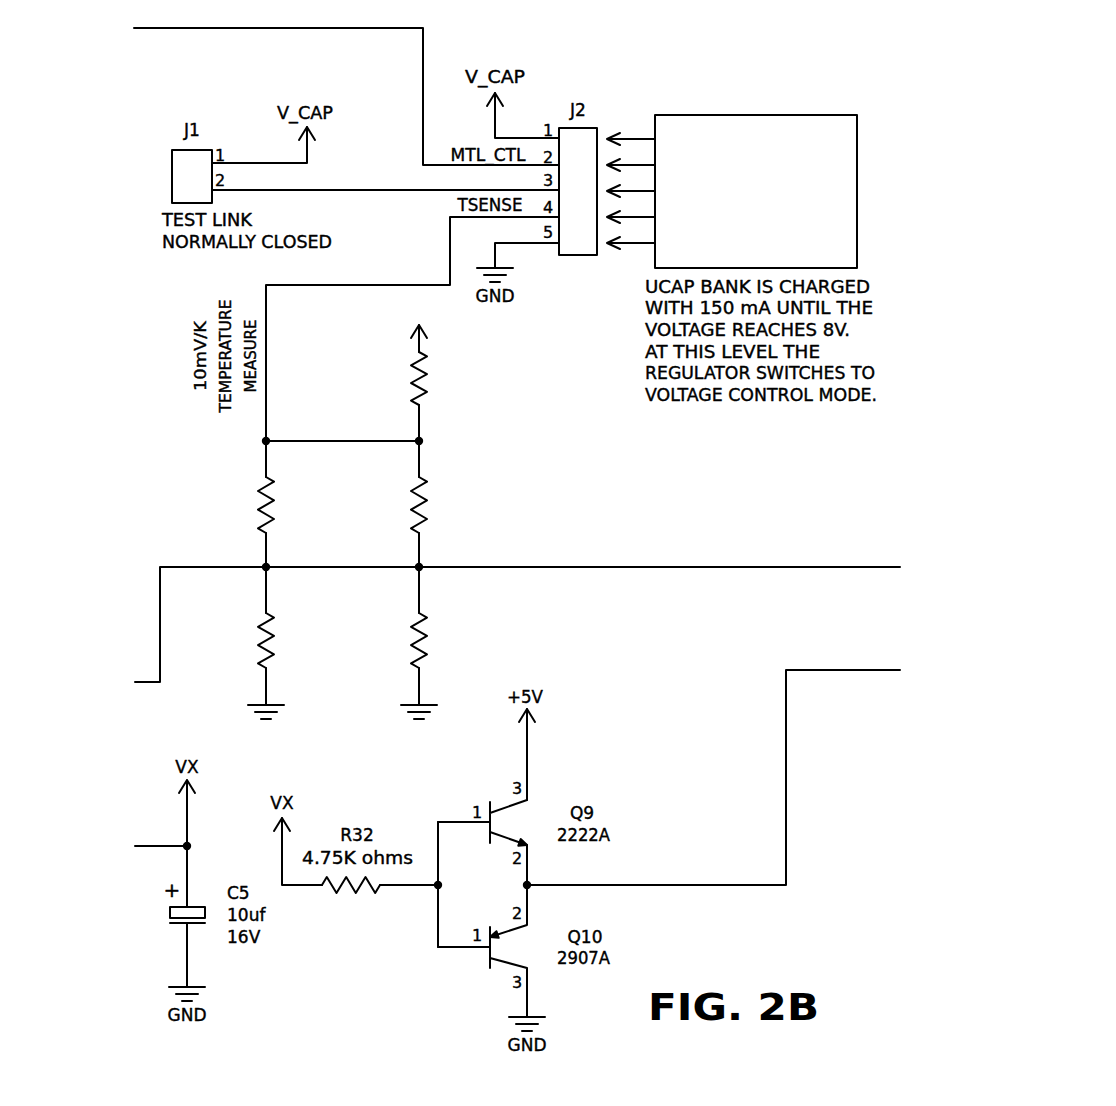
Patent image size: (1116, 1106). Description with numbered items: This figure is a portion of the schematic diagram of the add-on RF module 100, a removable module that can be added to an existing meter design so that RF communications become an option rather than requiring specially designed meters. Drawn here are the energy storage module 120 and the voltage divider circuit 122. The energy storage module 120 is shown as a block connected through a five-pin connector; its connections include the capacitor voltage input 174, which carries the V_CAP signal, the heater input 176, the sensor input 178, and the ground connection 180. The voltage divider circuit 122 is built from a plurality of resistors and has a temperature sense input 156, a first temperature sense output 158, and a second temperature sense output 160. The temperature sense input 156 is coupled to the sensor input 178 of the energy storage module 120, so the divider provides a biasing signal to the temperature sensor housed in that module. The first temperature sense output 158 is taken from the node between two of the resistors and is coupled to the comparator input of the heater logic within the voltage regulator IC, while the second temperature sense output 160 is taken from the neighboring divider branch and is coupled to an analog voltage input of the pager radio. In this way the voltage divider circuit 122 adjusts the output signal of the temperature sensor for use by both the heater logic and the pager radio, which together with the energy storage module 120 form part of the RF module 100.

The RF module 100 is at (699, 64).
The energy storage module 120 is at (787, 115).
The voltage divider circuit 122 is at (474, 459).
The temperature sense input 156 is at (268, 418).
The first temperature sense output 158 is at (266, 567).
The second temperature sense output 160 is at (422, 567).
The capacitor voltage input 174 is at (637, 139).
The heater input 176 is at (628, 165).
The sensor input 178 is at (628, 217).
The ground connection 180 is at (638, 243).